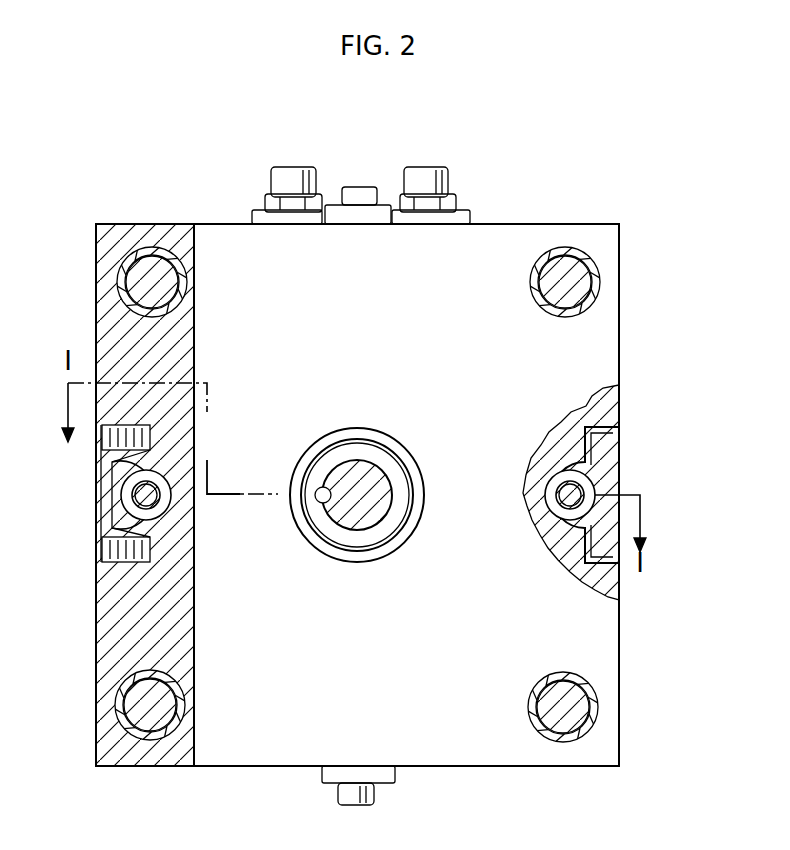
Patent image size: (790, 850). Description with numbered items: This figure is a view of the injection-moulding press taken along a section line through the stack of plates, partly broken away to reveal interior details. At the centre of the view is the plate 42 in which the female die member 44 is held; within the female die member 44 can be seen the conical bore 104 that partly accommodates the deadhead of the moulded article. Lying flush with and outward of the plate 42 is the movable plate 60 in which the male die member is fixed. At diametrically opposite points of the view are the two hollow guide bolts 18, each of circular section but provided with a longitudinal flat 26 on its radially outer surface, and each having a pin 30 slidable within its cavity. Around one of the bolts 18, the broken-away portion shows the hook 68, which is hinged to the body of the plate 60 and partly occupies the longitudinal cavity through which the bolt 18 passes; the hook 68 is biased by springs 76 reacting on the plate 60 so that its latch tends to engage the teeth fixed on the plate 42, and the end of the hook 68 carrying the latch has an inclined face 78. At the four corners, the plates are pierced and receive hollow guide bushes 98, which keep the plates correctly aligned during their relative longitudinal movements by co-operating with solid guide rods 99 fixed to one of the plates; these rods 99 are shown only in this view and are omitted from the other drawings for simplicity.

The hollow guide bolt 18 is at (165, 508).
The longitudinal flat 26 is at (122, 500).
The pin 30 is at (128, 492).
The plate 42 is at (612, 350).
The female die member 44 is at (390, 445).
The movable plate 60 is at (116, 332).
The hook 68 is at (604, 445).
The springs 76 is at (102, 550).
The inclined face 78 is at (100, 440).
The hollow guide bush 98 is at (122, 280).
The solid guide rod 99 is at (153, 265).
The conical bore 104 is at (325, 492).